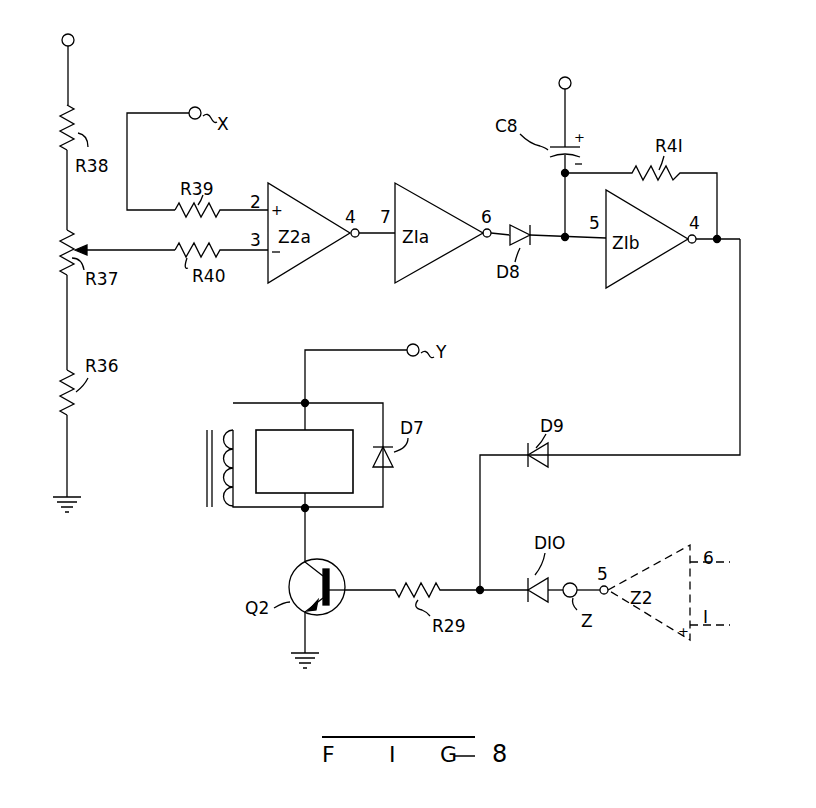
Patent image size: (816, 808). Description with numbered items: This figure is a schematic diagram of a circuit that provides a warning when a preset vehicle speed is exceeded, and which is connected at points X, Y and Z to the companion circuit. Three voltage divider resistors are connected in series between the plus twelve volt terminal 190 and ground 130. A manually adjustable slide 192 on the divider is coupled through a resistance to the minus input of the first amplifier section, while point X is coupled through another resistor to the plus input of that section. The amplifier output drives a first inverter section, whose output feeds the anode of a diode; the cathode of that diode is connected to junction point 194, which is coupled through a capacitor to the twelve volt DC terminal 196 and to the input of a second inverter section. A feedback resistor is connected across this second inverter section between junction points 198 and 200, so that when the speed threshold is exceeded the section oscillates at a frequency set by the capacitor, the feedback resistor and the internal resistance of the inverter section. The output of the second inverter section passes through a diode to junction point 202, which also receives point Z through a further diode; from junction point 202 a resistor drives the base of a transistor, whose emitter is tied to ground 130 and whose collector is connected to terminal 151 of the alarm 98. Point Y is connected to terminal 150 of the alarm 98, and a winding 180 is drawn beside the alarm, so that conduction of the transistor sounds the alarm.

The plus 12 volt terminal 190 is at (76, 42).
The slide 192 is at (78, 246).
The ground 130 is at (78, 508).
The 12 volt DC terminal 196 is at (572, 86).
The junction point 198 is at (562, 174).
The junction point 194 is at (565, 244).
The junction point 200 is at (719, 236).
The junction point 202 is at (478, 587).
The relay coil 180 is at (205, 449).
The terminal of alarm 150 is at (307, 430).
The terminal of alarm 151 is at (300, 497).
The alarm 98 is at (345, 494).